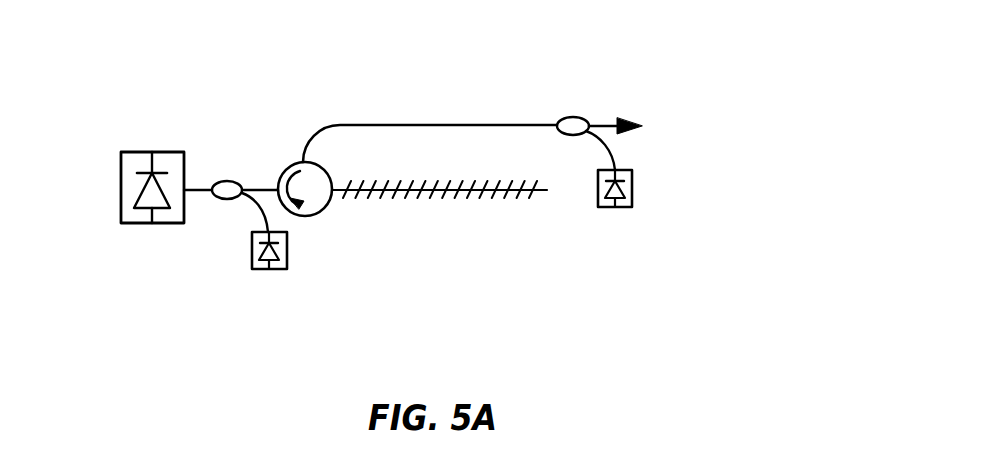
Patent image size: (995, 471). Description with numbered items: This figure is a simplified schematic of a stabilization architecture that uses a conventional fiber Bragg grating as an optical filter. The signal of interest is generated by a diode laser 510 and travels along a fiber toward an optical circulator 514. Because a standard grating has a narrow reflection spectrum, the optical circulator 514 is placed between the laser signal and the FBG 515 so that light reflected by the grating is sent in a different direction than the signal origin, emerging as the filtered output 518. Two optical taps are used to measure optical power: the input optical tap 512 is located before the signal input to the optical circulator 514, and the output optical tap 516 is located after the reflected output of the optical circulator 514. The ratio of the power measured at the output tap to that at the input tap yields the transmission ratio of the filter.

The diode laser 510 is at (137, 152).
The input optical tap 512 is at (262, 270).
The optical circulator 514 is at (320, 215).
The FBG 515 is at (447, 216).
The output optical tap 516 is at (605, 207).
The filtered output 518 is at (739, 90).